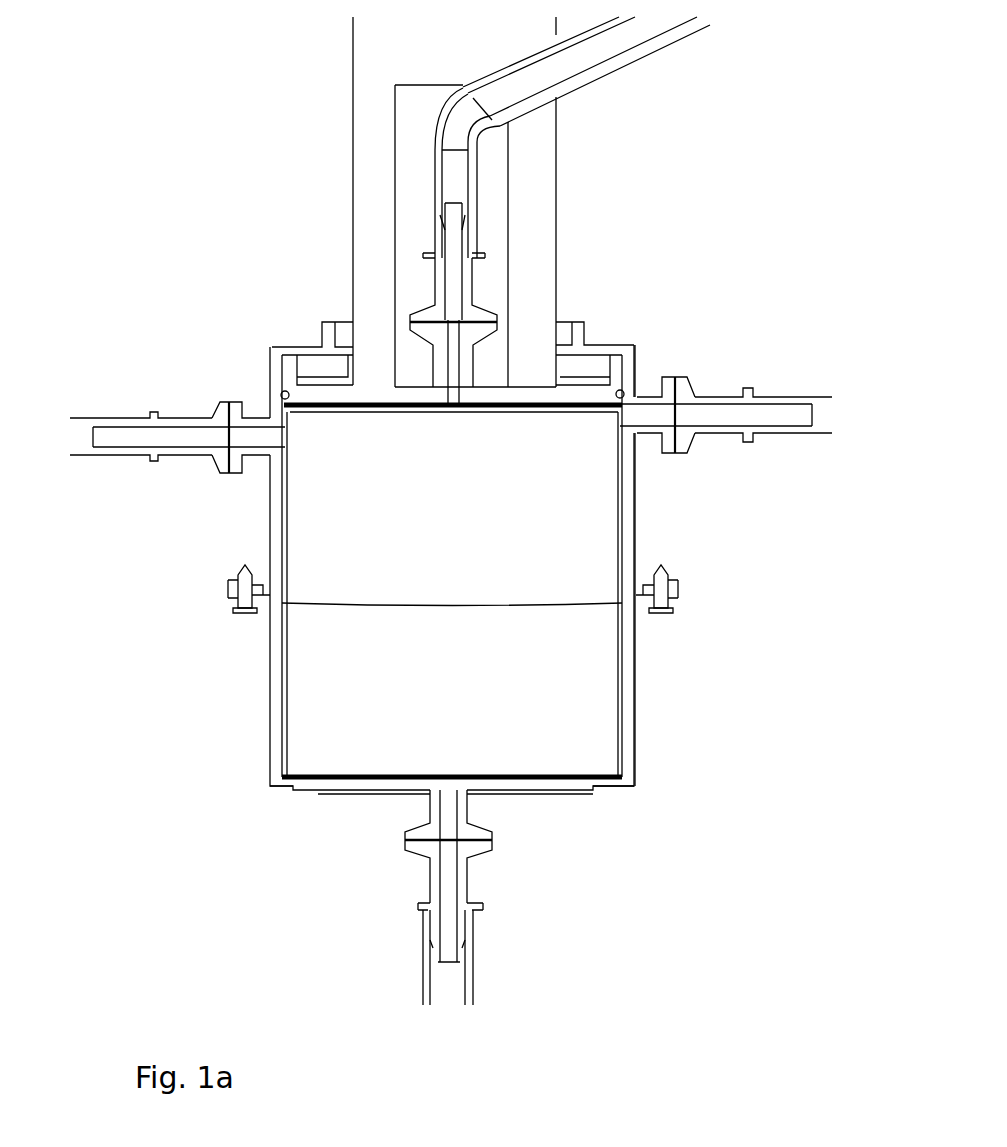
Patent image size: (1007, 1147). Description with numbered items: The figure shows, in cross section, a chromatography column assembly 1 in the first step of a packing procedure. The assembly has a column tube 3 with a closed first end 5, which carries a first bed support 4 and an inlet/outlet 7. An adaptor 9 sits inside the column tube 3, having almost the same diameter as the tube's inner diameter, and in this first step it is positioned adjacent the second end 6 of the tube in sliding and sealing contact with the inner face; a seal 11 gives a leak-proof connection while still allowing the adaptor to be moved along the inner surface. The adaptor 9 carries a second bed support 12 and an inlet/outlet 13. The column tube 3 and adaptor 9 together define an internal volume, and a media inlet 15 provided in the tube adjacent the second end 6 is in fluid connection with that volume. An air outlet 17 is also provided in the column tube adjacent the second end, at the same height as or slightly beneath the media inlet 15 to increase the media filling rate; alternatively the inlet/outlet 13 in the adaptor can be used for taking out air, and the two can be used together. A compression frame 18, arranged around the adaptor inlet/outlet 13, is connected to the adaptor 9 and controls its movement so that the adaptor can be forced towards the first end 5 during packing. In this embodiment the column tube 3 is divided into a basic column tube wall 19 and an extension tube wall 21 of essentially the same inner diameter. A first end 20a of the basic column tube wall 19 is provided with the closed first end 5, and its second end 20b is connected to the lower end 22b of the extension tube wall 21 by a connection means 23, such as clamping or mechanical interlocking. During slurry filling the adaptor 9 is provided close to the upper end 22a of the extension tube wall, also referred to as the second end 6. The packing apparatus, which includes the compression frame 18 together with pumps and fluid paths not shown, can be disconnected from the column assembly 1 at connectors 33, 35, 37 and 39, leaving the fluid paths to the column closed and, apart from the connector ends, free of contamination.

The chromatography column assembly 1 is at (167, 740).
The column tube 3 is at (683, 540).
The first bed support 4 is at (632, 787).
The closed first end 5 is at (593, 792).
The second end 6 is at (632, 412).
The inlet/outlet 7 is at (455, 783).
The adaptor 9 is at (552, 390).
The seal 11 is at (285, 392).
The second bed support 12 is at (420, 410).
The inlet/outlet 13 is at (450, 400).
The media inlet 15 is at (650, 393).
The air outlet 17 is at (270, 460).
The compression frame 18 is at (352, 190).
The basic column tube wall 19 is at (637, 705).
The first end of the basic column tube wall 20a is at (270, 785).
The second end of the basic column tube wall 20b is at (268, 612).
The extension tube wall 21 is at (637, 483).
The upper end of the extension tube wall 22a is at (270, 352).
The lower end of the extension tube wall 22b is at (270, 572).
The connection means 23 is at (255, 612).
The connector 33 is at (425, 305).
The connector 35 is at (693, 380).
The connector 37 is at (217, 473).
The connector 39 is at (420, 852).